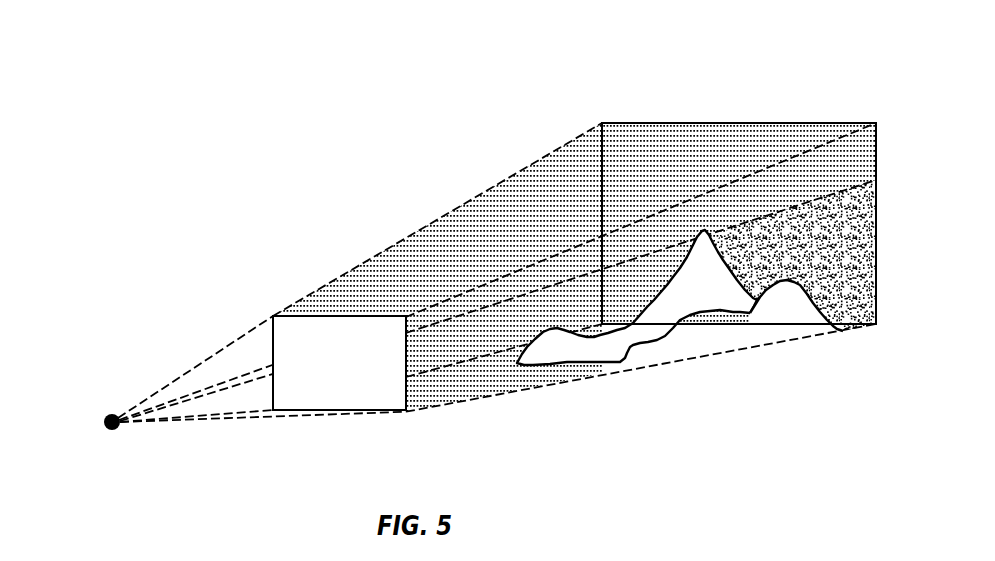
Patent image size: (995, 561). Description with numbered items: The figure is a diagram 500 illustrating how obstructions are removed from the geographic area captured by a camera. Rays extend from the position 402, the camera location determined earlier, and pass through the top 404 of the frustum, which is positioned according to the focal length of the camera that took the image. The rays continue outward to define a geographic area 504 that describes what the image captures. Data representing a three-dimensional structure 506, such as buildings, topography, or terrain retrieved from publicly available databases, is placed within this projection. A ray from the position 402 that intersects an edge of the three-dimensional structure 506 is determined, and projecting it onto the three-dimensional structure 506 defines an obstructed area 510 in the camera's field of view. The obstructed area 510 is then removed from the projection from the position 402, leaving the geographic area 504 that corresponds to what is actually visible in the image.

The position 402 is at (112, 430).
The top 404 is at (313, 316).
The diagram 500 is at (835, 59).
The geographic area 504 is at (520, 178).
The three-dimensional structure 506 is at (734, 358).
The obstructed area 510 is at (882, 276).